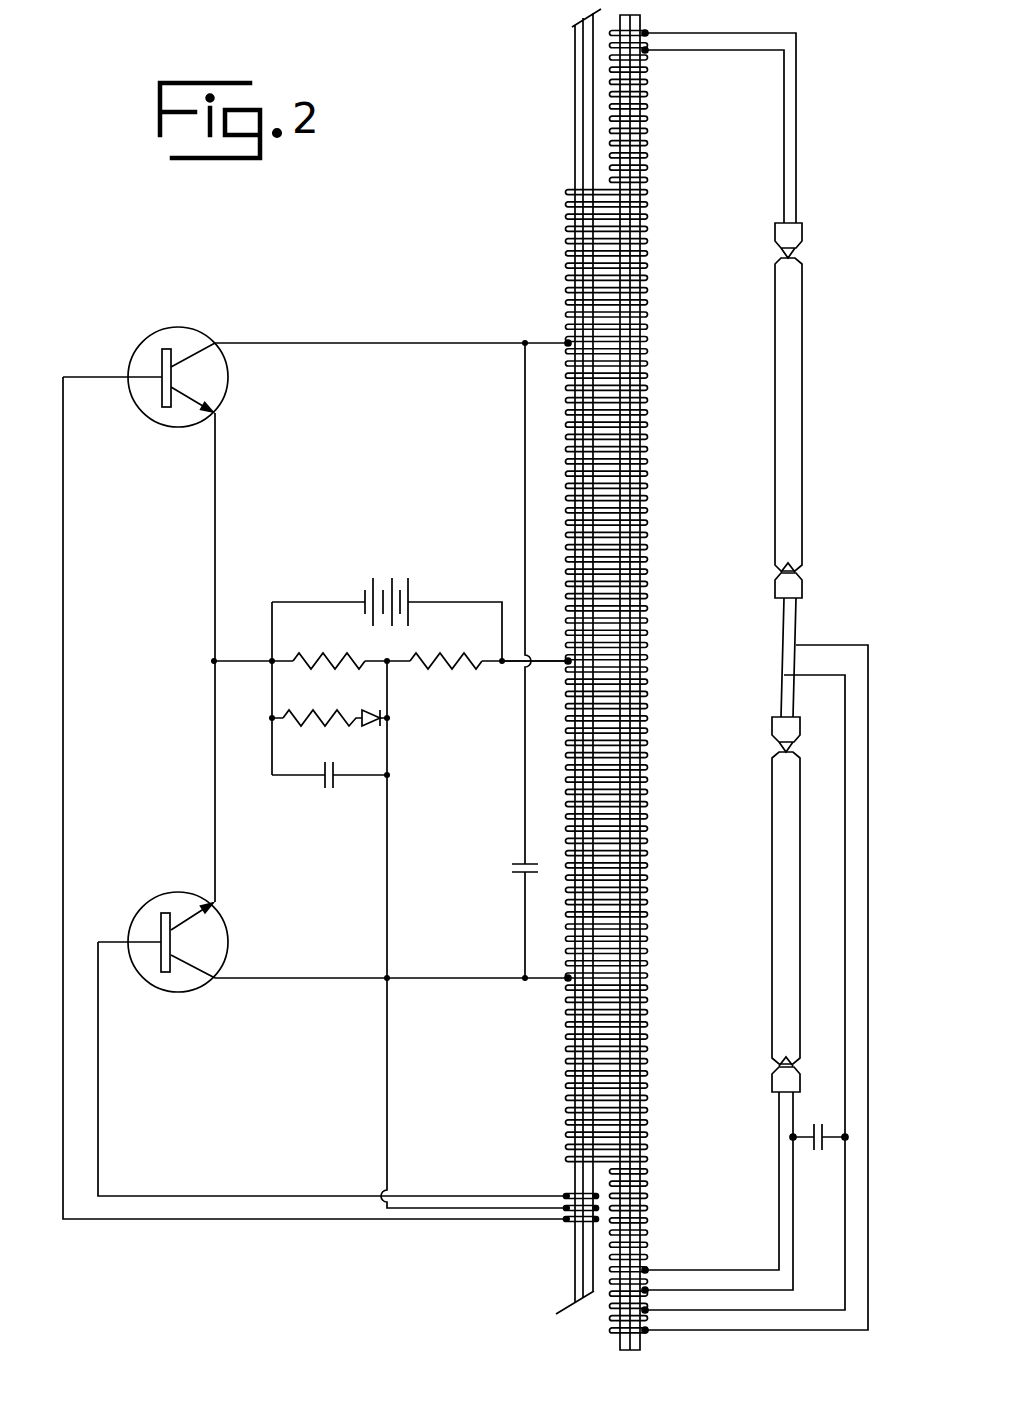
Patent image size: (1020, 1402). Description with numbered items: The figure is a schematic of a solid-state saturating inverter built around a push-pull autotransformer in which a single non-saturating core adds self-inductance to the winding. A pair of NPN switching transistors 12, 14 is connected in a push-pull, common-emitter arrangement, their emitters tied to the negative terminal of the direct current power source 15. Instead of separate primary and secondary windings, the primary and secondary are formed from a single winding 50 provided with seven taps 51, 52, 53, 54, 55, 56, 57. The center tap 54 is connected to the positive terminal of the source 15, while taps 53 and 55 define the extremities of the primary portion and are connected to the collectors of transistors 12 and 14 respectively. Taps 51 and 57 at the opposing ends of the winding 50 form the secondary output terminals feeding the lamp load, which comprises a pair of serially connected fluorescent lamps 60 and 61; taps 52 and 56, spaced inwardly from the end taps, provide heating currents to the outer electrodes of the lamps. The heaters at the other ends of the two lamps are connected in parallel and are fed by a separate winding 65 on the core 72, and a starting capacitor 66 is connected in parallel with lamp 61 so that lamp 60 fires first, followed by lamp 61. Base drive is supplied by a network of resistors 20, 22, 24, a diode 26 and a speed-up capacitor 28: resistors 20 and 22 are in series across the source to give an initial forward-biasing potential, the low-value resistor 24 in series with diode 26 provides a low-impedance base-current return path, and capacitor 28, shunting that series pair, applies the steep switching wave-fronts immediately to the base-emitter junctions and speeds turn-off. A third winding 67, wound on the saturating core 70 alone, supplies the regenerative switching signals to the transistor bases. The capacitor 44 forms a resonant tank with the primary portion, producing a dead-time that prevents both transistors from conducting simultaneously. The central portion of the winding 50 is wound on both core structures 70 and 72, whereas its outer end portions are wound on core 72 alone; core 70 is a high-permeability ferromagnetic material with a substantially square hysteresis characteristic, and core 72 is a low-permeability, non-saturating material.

The switching transistor 12 is at (203, 332).
The switching transistor 14 is at (226, 928).
The direct current power source 15 is at (410, 590).
The resistor 20 is at (350, 656).
The resistor 22 is at (456, 656).
The resistor 24 is at (322, 711).
The diode 26 is at (374, 711).
The speed-up capacitor 28 is at (340, 779).
The capacitor 44 is at (512, 873).
The winding 50 is at (660, 472).
The tap 51 is at (650, 33).
The tap 52 is at (650, 50).
The tap 53 is at (565, 338).
The center tap 54 is at (566, 665).
The tap 55 is at (566, 982).
The tap 56 is at (650, 1268).
The tap 57 is at (650, 1290).
The fluorescent lamp 60 is at (803, 331).
The fluorescent lamp 61 is at (772, 829).
The separate winding 65 is at (650, 1332).
The starting capacitor 66 is at (815, 1146).
The third winding 67 is at (563, 1193).
The saturating core 70 is at (568, 70).
The second core 72 is at (656, 22).